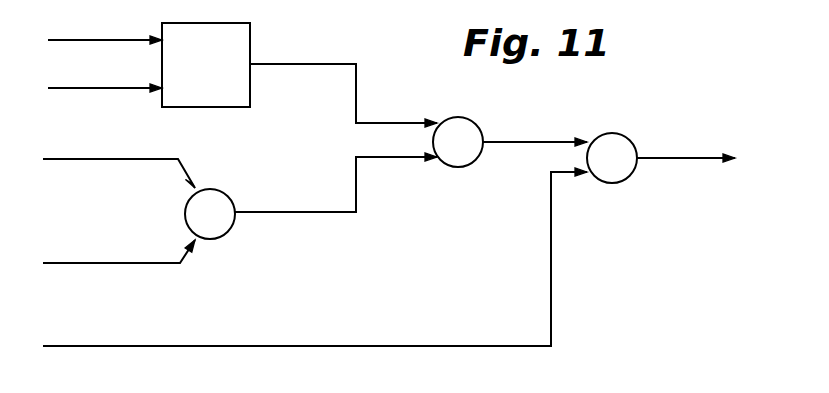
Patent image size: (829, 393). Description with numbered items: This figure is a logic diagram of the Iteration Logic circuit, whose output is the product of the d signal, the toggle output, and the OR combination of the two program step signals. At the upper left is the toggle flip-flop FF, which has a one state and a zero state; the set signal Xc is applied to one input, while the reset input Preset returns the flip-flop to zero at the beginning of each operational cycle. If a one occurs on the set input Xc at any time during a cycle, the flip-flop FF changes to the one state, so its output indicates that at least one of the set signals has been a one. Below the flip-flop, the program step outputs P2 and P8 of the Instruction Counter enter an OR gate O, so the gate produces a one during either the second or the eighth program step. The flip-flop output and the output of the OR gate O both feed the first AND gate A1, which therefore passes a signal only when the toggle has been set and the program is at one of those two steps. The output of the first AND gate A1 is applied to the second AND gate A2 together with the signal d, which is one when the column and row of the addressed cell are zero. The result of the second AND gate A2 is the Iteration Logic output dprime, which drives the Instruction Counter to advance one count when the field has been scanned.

The toggle flip-flop FF is at (206, 83).
The X^c input Xc is at (93, 36).
The P reset input Preset is at (93, 85).
The OR gate O is at (210, 214).
The program step P2 output P2 is at (107, 166).
The program step P8 output P8 is at (106, 260).
The first AND gate A1 is at (458, 142).
The second AND gate A2 is at (612, 158).
The d signal input d is at (304, 263).
The d' output dprime is at (698, 159).